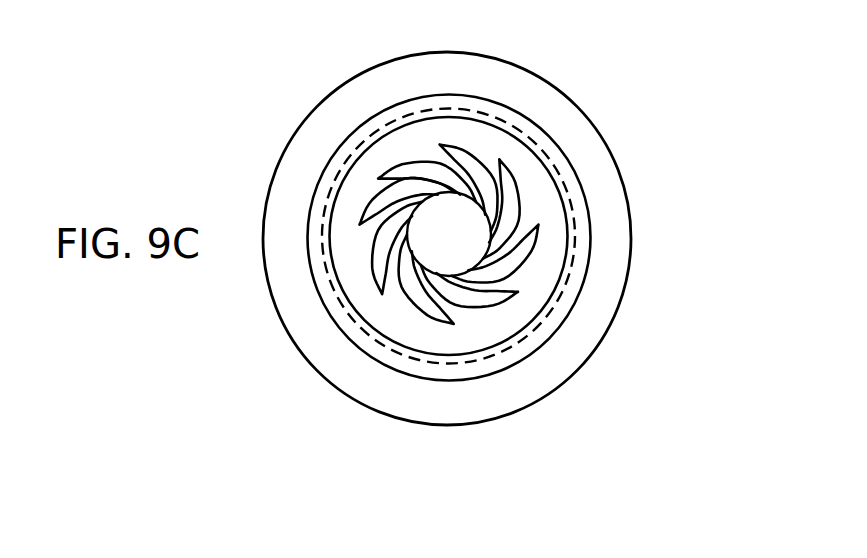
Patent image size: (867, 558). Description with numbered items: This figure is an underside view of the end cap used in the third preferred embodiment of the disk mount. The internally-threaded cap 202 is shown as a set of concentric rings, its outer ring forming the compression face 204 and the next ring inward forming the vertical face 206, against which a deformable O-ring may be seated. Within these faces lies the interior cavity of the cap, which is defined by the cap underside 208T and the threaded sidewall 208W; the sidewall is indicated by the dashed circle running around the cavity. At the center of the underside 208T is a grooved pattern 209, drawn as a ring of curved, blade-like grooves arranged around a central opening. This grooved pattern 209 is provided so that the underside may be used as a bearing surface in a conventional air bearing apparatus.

The internally-threaded cap 202 is at (500, 244).
The compression face 204 is at (530, 95).
The vertical face 206 is at (473, 95).
The cap underside 208T is at (527, 167).
The threaded sidewall 208W is at (566, 204).
The grooved pattern 209 is at (485, 310).